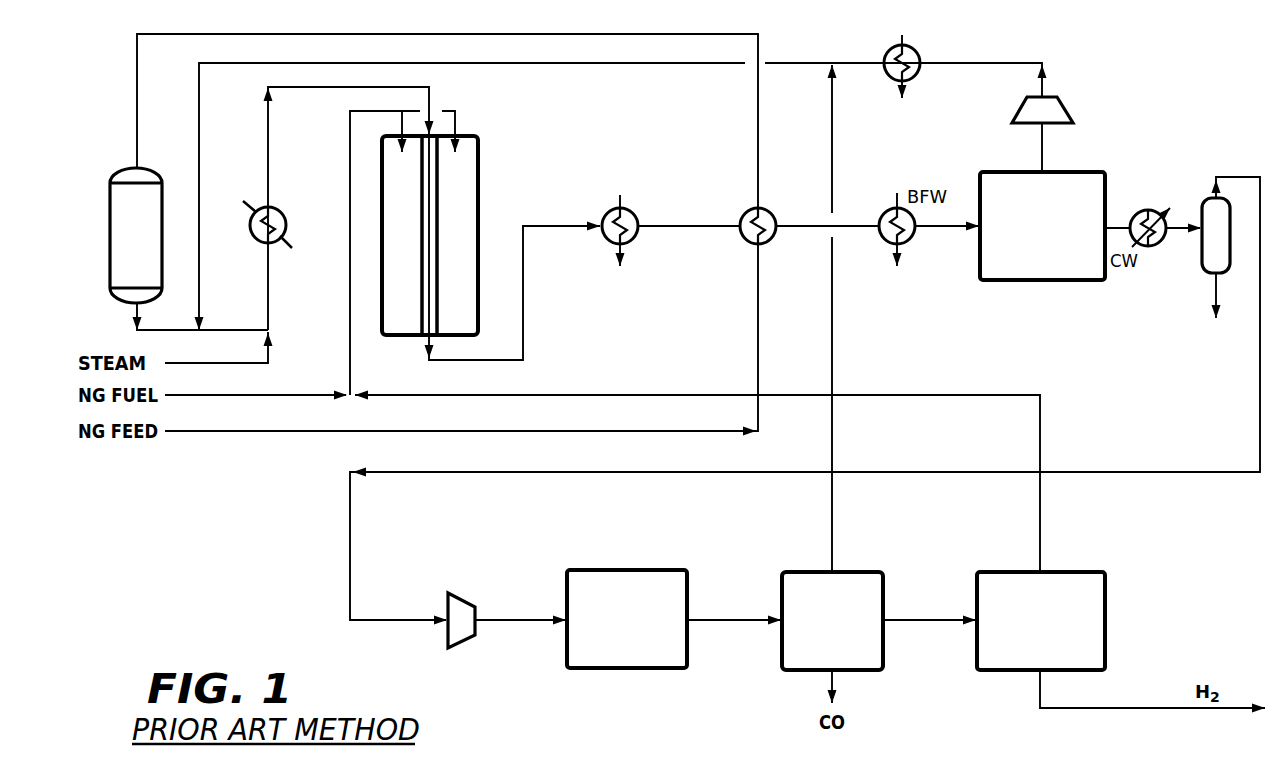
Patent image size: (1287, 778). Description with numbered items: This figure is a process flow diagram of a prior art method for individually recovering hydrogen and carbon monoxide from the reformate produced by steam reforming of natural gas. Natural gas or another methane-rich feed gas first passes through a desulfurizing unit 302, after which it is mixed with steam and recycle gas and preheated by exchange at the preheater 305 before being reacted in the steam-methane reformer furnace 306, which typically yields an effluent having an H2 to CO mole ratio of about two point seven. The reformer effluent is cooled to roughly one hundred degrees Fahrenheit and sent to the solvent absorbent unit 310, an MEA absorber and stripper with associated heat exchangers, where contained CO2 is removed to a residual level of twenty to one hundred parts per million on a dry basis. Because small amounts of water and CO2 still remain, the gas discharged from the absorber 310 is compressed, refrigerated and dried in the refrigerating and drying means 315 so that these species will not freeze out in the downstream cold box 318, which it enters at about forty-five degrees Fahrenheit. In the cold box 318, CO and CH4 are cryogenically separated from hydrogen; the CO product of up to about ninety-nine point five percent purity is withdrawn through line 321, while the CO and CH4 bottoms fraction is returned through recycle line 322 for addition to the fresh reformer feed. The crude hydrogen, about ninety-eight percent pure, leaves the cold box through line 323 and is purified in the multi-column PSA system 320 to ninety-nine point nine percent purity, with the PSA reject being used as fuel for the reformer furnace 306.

The desulfurizing unit 302 is at (121, 239).
The preheat exchange 305 is at (282, 211).
The reformer furnace 306 is at (484, 168).
The solvent absorbent unit 310 is at (1056, 269).
The means for refrigerating and drying 315 is at (687, 648).
The cold box unit 318 is at (817, 660).
The multi-column PSA system 320 is at (1060, 660).
The CO product line 321 is at (834, 676).
The recycle line 322 is at (833, 312).
The hydrogen product line 323 is at (903, 618).